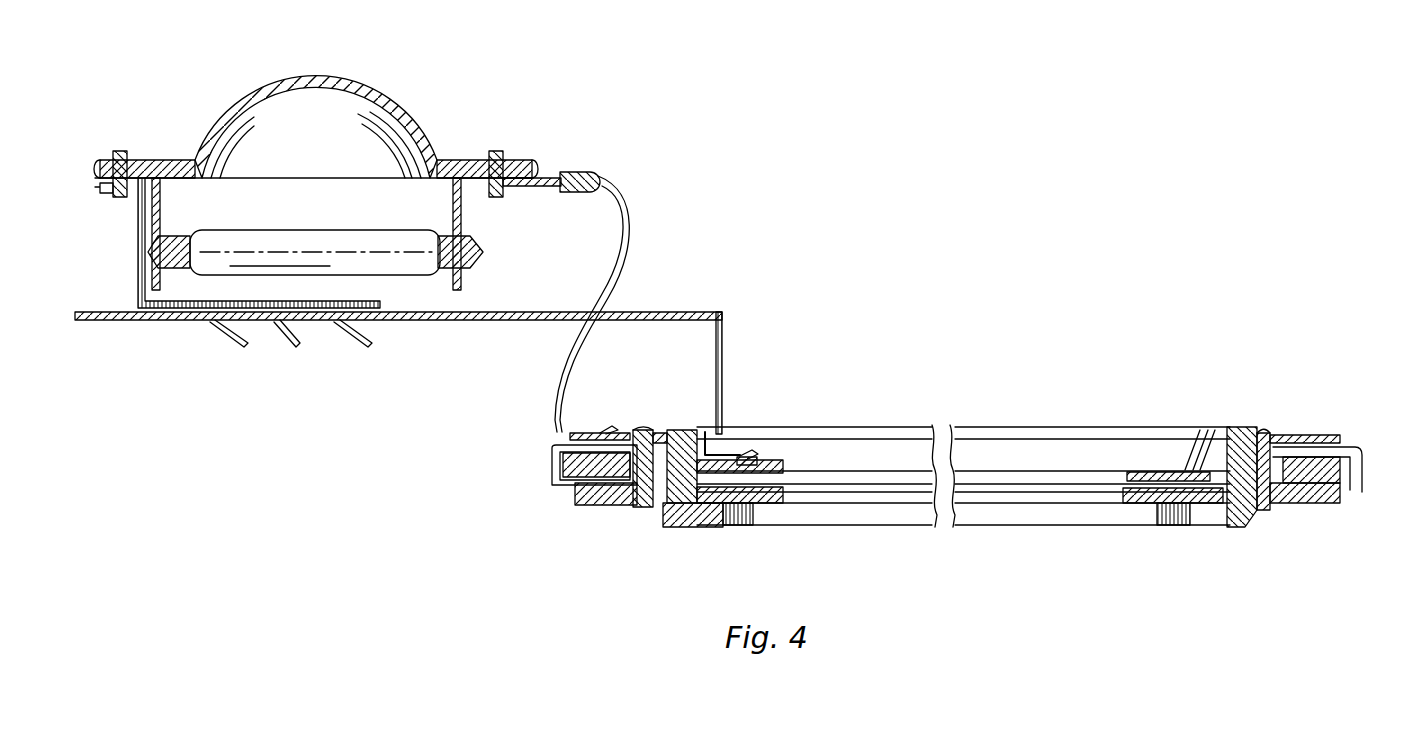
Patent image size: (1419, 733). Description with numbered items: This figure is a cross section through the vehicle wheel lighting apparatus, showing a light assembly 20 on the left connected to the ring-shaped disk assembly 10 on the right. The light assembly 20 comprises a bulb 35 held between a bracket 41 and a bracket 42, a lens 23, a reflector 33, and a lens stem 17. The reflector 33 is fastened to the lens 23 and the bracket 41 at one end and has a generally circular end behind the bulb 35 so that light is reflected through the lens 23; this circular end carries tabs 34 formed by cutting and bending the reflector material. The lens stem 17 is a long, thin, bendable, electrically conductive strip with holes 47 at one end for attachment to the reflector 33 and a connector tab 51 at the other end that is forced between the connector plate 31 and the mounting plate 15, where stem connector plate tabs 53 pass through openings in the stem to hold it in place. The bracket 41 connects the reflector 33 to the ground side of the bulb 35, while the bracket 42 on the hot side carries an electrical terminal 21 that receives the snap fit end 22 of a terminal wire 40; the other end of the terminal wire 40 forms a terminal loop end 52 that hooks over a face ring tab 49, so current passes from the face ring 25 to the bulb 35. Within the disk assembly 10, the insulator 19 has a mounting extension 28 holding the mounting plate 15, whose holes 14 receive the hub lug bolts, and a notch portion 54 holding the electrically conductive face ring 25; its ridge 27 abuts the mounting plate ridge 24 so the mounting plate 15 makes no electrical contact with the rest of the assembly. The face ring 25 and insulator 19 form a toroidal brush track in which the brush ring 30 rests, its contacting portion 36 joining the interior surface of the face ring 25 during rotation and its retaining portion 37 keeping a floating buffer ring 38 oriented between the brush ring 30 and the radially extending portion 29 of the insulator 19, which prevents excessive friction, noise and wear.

The disk assembly 10 is at (1280, 392).
The holes 14 is at (870, 495).
The mounting plate 15 is at (1032, 482).
The lens stem 17 is at (698, 315).
The insulator 19 is at (1262, 513).
The light assembly 20 is at (316, 113).
The electrical terminal 21 is at (548, 178).
The snap fit end 22 is at (588, 172).
The lens 23 is at (412, 128).
The mounting plate ridge 24 is at (708, 450).
The face ring 25 is at (1292, 432).
The ridge 27 is at (675, 430).
The mounting extension 28 is at (690, 528).
The radially extending portion 29 is at (582, 506).
The brush ring 30 is at (1364, 452).
The connector plate 31 is at (1160, 476).
The reflector 33 is at (140, 300).
The tabs 34 is at (248, 344).
The bulb 35 is at (330, 232).
The contacting portion 36 is at (1332, 434).
The retaining portion 37 is at (1345, 472).
The buffer ring 38 is at (570, 472).
The terminal wire 40 is at (628, 214).
The bracket 41 is at (162, 215).
The bracket 42 is at (463, 212).
The holes 47 is at (160, 320).
The face ring tab 49 is at (606, 428).
The connector tab 51 is at (743, 526).
The terminal loop end 52 is at (585, 432).
The stem connector plate tabs 53 is at (752, 462).
The notch portion 54 is at (658, 432).